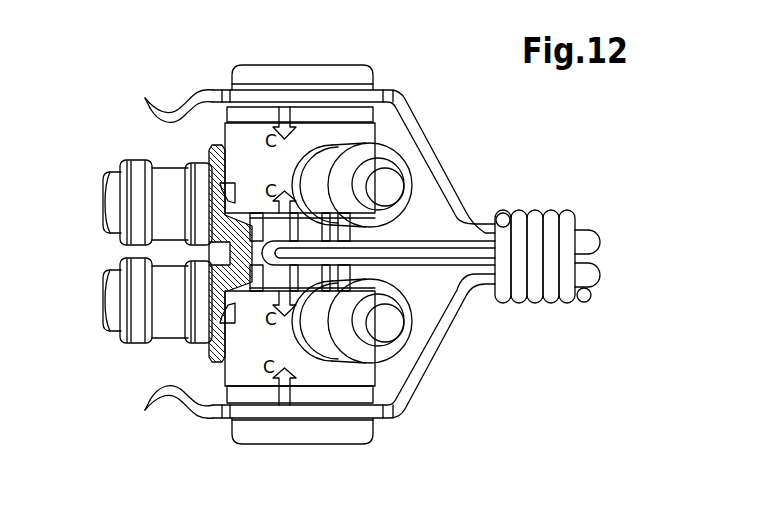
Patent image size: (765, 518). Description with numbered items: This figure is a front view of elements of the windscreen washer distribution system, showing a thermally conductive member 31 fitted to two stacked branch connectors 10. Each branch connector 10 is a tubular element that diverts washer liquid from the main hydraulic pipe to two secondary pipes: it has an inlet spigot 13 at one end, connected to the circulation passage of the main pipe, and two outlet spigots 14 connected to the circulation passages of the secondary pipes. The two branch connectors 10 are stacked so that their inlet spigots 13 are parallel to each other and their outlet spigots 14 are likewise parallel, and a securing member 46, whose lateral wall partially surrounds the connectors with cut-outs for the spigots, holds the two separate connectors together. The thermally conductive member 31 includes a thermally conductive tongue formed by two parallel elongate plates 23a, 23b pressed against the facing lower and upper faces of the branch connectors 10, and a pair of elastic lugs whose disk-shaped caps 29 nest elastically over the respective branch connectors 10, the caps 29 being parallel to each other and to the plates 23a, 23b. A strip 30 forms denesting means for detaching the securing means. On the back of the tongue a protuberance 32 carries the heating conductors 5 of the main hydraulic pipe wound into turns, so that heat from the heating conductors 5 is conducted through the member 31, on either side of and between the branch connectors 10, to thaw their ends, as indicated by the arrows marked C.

The thermally conductive member 31 is at (236, 50).
The cap 29 is at (268, 76).
The branch connector 10 is at (345, 113).
The strip 30 is at (146, 100).
The inlet spigot 13 is at (108, 210).
The securing member 46 is at (200, 350).
The outlet spigot 14 is at (389, 162).
The plate 23a is at (432, 241).
The plate 23b is at (443, 266).
The heating conductors 5 is at (550, 222).
The protuberance 32 is at (600, 242).